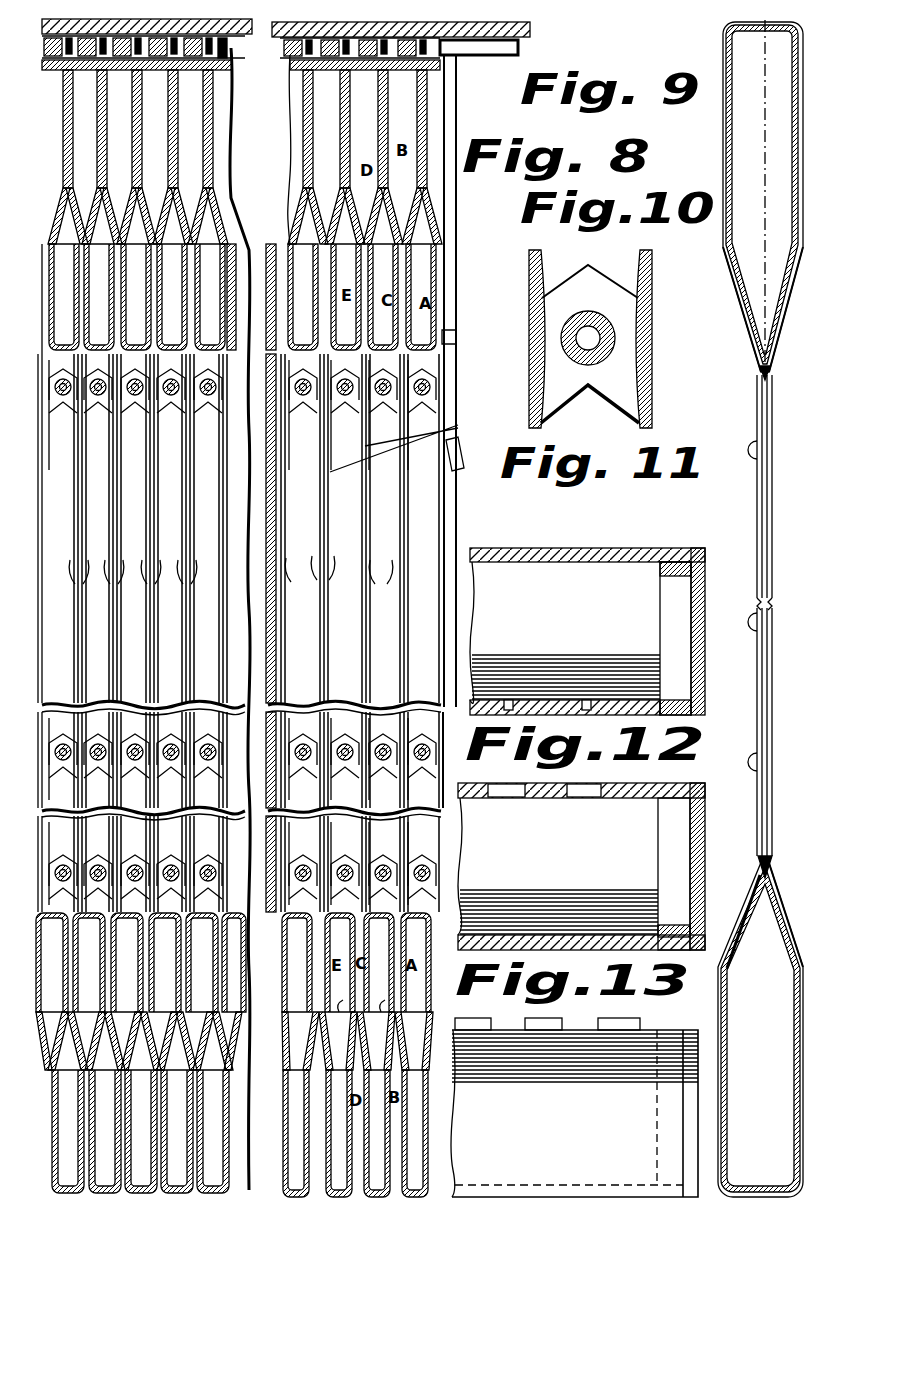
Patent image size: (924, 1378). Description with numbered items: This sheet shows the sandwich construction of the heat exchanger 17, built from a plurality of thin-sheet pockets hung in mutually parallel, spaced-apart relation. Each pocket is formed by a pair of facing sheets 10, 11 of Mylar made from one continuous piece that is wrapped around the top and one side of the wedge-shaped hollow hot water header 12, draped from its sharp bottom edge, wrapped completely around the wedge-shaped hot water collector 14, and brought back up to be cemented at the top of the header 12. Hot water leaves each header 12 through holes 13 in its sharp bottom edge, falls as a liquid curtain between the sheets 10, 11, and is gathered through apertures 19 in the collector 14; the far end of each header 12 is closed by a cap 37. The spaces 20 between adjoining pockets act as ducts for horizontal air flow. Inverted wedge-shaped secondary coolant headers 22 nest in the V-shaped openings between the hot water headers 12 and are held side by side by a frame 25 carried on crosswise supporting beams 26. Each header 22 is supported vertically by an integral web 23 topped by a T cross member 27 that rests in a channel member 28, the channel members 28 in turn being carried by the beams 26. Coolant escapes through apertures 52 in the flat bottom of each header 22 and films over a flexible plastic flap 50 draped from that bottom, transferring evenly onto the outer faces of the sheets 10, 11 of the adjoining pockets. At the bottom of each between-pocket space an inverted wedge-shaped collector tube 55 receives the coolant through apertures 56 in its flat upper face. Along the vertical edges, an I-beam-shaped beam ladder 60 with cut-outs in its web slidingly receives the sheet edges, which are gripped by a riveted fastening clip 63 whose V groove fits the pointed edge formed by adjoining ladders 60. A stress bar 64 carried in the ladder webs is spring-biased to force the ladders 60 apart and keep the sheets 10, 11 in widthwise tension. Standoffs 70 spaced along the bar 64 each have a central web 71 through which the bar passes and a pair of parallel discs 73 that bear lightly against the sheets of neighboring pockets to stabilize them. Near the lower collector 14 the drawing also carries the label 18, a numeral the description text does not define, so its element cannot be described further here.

In FIG. 8, the facing sheet 10 is at (403, 573).
In FIG. 9, the facing sheet 10 is at (748, 324).
In FIG. 8, the facing sheet 11 is at (281, 633).
In FIG. 9, the facing sheet 11 is at (740, 10).
In FIG. 8, the hot water header 12 is at (342, 151).
In FIG. 9, the hot water header 12 is at (752, 368).
In FIG. 11, the hot water header 12 is at (648, 548).
In FIG. 9, the holes 13 is at (764, 372).
In FIG. 11, the holes 13 is at (594, 700).
In FIG. 8, the hot water collector 14 is at (372, 1166).
In FIG. 9, the hot water collector 14 is at (781, 906).
In FIG. 13, the hot water collector 14 is at (570, 1152).
In FIG. 8, the heat exchanger 17 is at (460, 494).
In FIG. 9, the taper wall 18 is at (790, 934).
In FIG. 8, the apertures 19 is at (430, 1072).
In FIG. 9, the apertures 19 is at (756, 876).
In FIG. 13, the apertures 19 is at (603, 1030).
In FIG. 8, the spaces 20 is at (417, 670).
In FIG. 8, the secondary coolant header 22 is at (55, 221).
In FIG. 8, the web 23 is at (66, 150).
In FIG. 8, the frame 25 is at (458, 218).
In FIG. 8, the supporting beams 26 is at (516, 54).
In FIG. 8, the T cross member 27 is at (72, 58).
In FIG. 8, the channel member 28 is at (227, 56).
In FIG. 11, the cap 37 is at (704, 586).
In FIG. 8, the flexible plastic flap 50 is at (410, 443).
In FIG. 8, the apertures 52 is at (446, 340).
In FIG. 8, the coolant collector tube 55 is at (385, 1007).
In FIG. 12, the coolant collector tube 55 is at (532, 864).
In FIG. 8, the apertures 56 is at (355, 928).
In FIG. 12, the apertures 56 is at (588, 798).
In FIG. 8, the beam ladder 60 is at (105, 626).
In FIG. 9, the fastening clip 63 is at (773, 552).
In FIG. 8, the stress bar 64 is at (428, 390).
In FIG. 10, the stress bar 64 is at (584, 358).
In FIG. 10, the standoff 70 is at (614, 276).
In FIG. 8, the central web 71 is at (440, 767).
In FIG. 10, the central web 71 is at (552, 280).
In FIG. 8, the discs 73 is at (440, 745).
In FIG. 10, the discs 73 is at (532, 350).